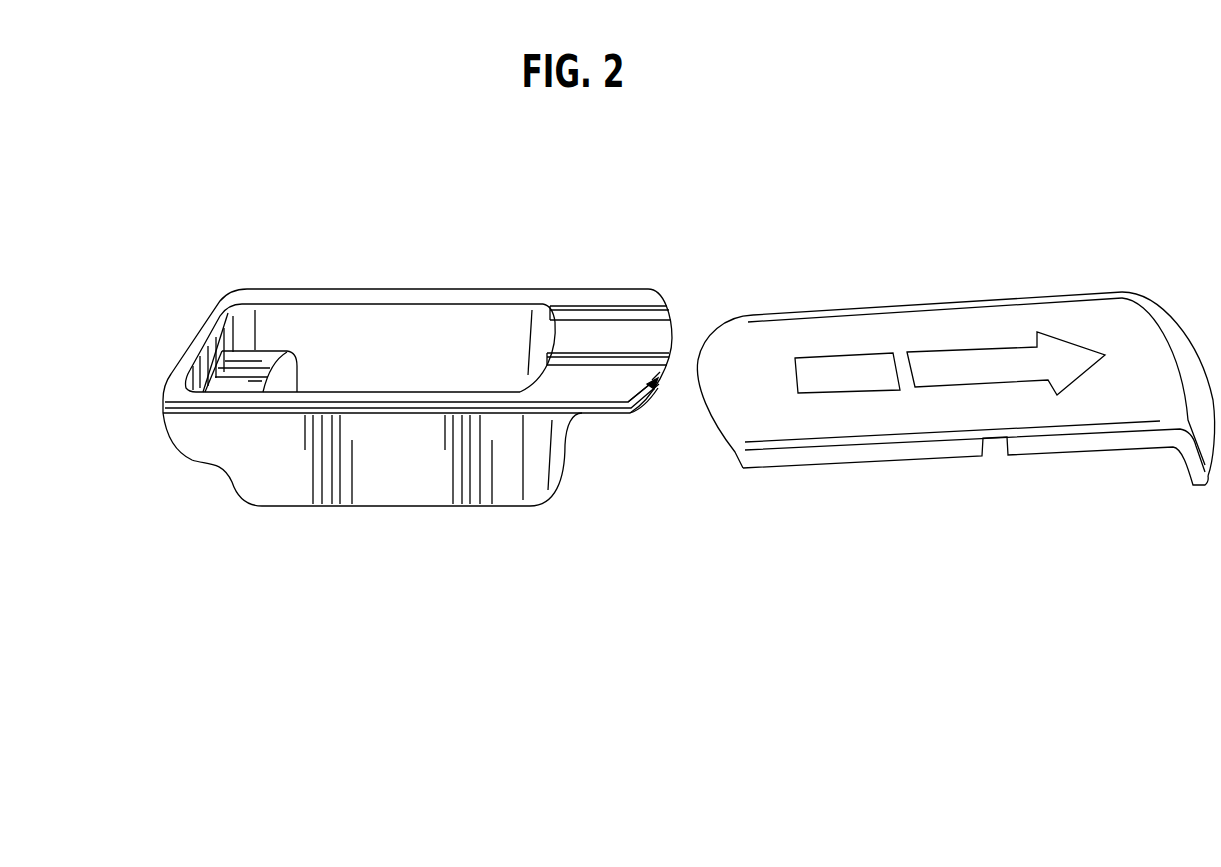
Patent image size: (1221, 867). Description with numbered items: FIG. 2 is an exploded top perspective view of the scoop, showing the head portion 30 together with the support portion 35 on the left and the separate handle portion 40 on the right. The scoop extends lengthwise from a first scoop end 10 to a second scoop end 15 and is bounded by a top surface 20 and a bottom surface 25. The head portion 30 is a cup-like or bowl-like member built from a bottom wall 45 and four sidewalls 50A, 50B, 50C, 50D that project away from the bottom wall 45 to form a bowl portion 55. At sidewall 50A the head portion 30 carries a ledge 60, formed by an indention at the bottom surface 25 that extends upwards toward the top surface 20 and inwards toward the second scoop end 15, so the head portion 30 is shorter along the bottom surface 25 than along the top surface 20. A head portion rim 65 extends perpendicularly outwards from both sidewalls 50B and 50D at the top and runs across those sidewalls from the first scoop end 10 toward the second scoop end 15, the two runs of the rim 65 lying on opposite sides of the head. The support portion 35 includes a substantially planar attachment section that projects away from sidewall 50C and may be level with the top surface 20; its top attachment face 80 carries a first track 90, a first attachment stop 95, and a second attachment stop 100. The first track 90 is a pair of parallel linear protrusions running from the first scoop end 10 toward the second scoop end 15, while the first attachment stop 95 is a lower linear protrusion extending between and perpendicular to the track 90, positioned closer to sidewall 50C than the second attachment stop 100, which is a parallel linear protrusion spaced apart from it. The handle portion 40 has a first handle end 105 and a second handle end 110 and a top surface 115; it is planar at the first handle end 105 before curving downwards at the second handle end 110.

The first scoop end 10 is at (172, 347).
The second scoop end 15 is at (618, 298).
The top surface 20 is at (363, 398).
The bottom surface 25 is at (492, 507).
The head portion 30 is at (287, 476).
The support portion 35 is at (653, 396).
The handle portion 40 is at (955, 379).
The bottom wall 45 is at (260, 508).
The sidewall 50A is at (203, 312).
The sidewall 50B is at (300, 327).
The sidewall 50C is at (571, 447).
The sidewall 50D is at (385, 483).
The bowl portion 55 is at (383, 333).
The ledge 60 is at (203, 459).
The head portion rim 65 is at (450, 398).
The top attachment face 80 is at (672, 342).
The first track 90 is at (643, 310).
The first attachment stop 95 is at (572, 337).
The second attachment stop 100 is at (598, 335).
The first handle end 105 is at (773, 445).
The second handle end 110 is at (1142, 298).
The top surface 115 is at (1018, 357).